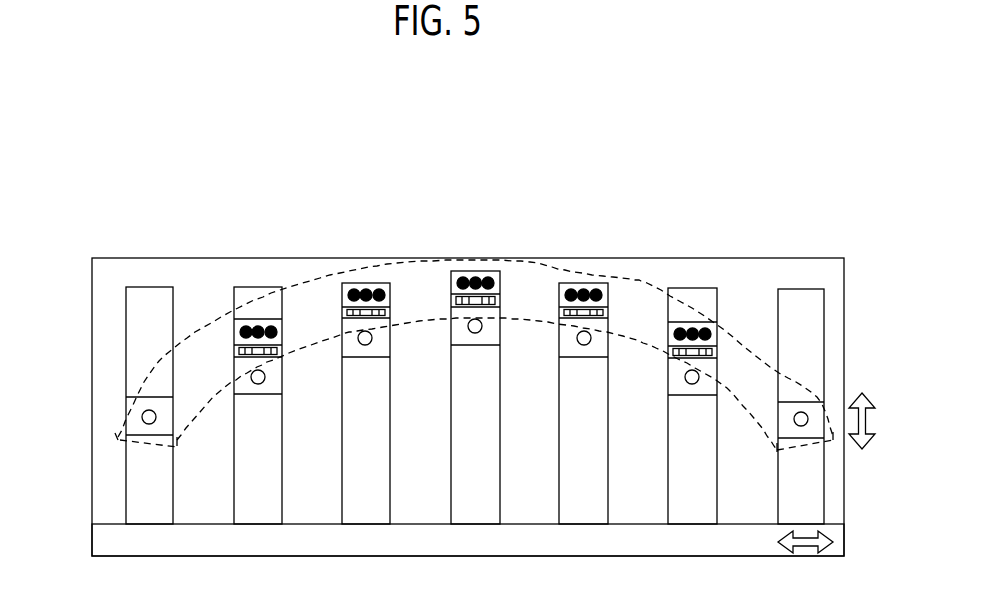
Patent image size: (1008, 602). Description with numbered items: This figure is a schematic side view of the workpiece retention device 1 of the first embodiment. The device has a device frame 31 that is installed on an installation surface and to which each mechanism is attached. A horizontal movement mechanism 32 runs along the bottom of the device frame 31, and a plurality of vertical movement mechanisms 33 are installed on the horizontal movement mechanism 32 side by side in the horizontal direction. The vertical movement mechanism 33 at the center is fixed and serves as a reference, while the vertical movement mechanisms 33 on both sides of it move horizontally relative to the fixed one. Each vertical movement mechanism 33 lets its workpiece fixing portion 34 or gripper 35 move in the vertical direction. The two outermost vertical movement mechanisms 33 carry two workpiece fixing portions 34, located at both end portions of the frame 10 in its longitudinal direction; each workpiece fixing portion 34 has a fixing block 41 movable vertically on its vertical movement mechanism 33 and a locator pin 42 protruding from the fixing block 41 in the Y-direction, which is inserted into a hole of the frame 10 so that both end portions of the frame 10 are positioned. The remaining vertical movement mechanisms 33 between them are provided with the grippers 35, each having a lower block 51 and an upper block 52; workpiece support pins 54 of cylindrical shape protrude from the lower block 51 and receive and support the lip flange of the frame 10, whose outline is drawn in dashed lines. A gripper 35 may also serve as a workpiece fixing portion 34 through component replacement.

The workpiece retention device 1 is at (380, 228).
The frame 10 is at (653, 286).
The device frame 31 is at (135, 257).
The horizontal movement mechanism 32 is at (103, 538).
The vertical movement mechanism 33 is at (247, 297).
The workpiece fixing portion 34 is at (143, 390).
The gripper 35 is at (727, 361).
The fixing block 41 is at (135, 427).
The locator pin 42 is at (141, 417).
The lower block 51 is at (608, 330).
The upper block 52 is at (572, 284).
The workpiece support pin 54 is at (577, 338).